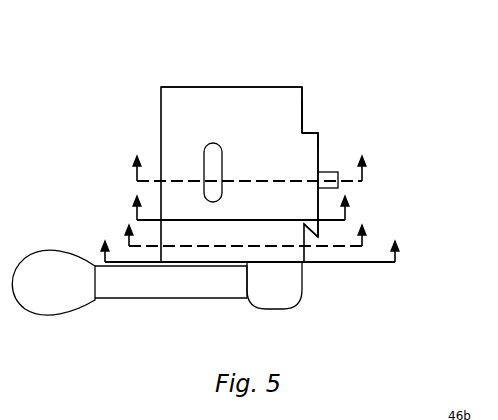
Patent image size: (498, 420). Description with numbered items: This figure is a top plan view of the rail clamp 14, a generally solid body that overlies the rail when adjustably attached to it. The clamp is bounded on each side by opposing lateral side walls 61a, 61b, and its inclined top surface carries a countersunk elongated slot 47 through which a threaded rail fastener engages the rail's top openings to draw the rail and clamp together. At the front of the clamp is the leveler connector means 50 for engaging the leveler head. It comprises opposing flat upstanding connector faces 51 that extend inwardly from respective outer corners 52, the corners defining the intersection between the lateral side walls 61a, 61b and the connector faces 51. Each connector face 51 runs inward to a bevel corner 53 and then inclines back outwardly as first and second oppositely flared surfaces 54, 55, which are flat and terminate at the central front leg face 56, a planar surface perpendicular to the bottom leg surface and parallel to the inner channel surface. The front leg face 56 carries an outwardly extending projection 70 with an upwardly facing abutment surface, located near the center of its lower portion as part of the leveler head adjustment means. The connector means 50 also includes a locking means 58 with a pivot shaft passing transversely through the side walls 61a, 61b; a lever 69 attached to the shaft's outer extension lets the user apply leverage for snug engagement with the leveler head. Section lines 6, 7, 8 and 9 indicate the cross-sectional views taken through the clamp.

The rail clamp 14 is at (157, 77).
The lateral side wall 61a is at (232, 86).
The outer corners 52 is at (301, 86).
The connector faces 51 is at (303, 115).
The leveler connector means 50 is at (324, 97).
The first flared surface 54 is at (308, 133).
The front leg face 56 is at (320, 139).
The bevel corner 53 is at (306, 133).
The second flared surface 55 is at (318, 238).
The projection 70 is at (333, 167).
The countersunk elongated slot 47 is at (213, 143).
The lateral side wall 61b is at (171, 298).
The lever 69 is at (128, 290).
The locking means 58 is at (254, 307).
The section line 6- 6 is at (247, 169).
The section line 7- 7 is at (238, 208).
The section line 8- 8 is at (244, 237).
The section line 9- 9 is at (248, 252).